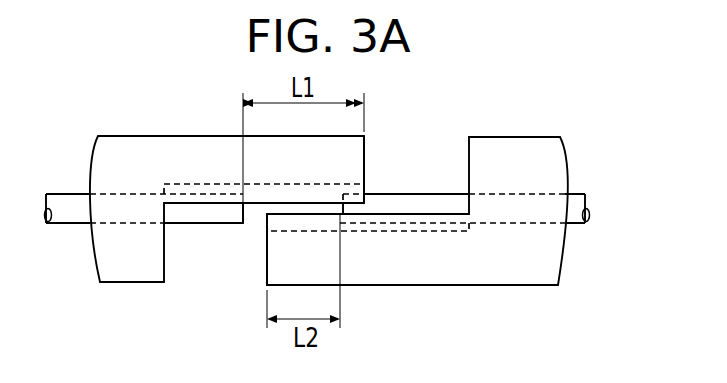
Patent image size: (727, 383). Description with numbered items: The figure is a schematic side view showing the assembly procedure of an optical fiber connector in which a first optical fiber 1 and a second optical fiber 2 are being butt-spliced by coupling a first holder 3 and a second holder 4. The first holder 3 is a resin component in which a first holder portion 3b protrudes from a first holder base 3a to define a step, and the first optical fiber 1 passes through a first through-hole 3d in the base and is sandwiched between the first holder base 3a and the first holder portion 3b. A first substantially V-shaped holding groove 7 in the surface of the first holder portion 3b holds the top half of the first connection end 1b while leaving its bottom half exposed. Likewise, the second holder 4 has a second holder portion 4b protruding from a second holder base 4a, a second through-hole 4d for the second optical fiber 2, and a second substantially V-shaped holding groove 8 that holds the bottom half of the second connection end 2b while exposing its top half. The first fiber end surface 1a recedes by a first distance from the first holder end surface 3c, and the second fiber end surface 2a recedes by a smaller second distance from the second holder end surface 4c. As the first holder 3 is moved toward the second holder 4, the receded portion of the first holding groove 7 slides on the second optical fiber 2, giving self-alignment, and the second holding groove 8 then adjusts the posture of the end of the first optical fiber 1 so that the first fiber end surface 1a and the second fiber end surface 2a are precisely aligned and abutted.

The first optical fiber 1 is at (61, 193).
The first fiber end surface 1a is at (248, 224).
The first connection end 1b is at (186, 216).
The second optical fiber 2 is at (572, 193).
The second fiber end surface 2a is at (333, 215).
The second connection end 2b is at (410, 193).
The first holder 3 is at (211, 136).
The first holder base 3a is at (129, 284).
The first holder portion 3b is at (272, 136).
The first holder end surface 3c is at (365, 167).
The first through-hole 3d is at (125, 218).
The second holder 4 is at (512, 137).
The second holder base 4a is at (545, 137).
The second holder portion 4b is at (426, 286).
The second holder end surface 4c is at (266, 267).
The second through-hole 4d is at (566, 226).
The first substantially V-shaped holding groove 7 is at (195, 182).
The second substantially V-shaped holding groove 8 is at (443, 233).